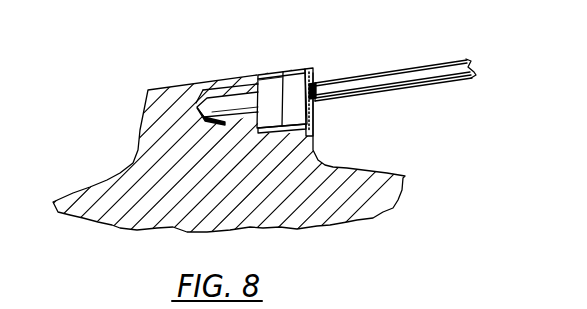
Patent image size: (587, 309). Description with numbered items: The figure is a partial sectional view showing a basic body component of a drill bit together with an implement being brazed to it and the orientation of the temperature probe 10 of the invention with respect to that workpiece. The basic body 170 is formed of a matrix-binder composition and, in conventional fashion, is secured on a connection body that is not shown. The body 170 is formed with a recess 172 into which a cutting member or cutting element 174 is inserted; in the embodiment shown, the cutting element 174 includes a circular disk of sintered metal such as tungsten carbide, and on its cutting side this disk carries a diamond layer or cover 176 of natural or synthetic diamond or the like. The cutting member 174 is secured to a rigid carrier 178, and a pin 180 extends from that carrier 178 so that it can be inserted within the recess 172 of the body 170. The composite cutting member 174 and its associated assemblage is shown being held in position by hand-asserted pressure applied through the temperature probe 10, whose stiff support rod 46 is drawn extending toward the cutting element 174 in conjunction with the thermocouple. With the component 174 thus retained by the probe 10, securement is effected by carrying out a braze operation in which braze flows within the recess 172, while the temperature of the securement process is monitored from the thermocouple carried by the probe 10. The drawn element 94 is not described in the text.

The temperature probe 10 is at (395, 111).
The stiff support rod 46 is at (395, 87).
The fastener 94 is at (313, 82).
The basic body 170 is at (110, 200).
The recess 172 is at (197, 108).
The cutting element 174 is at (297, 66).
The diamond layer 176 is at (313, 118).
The rigid carrier 178 is at (270, 69).
The pin 180 is at (211, 127).